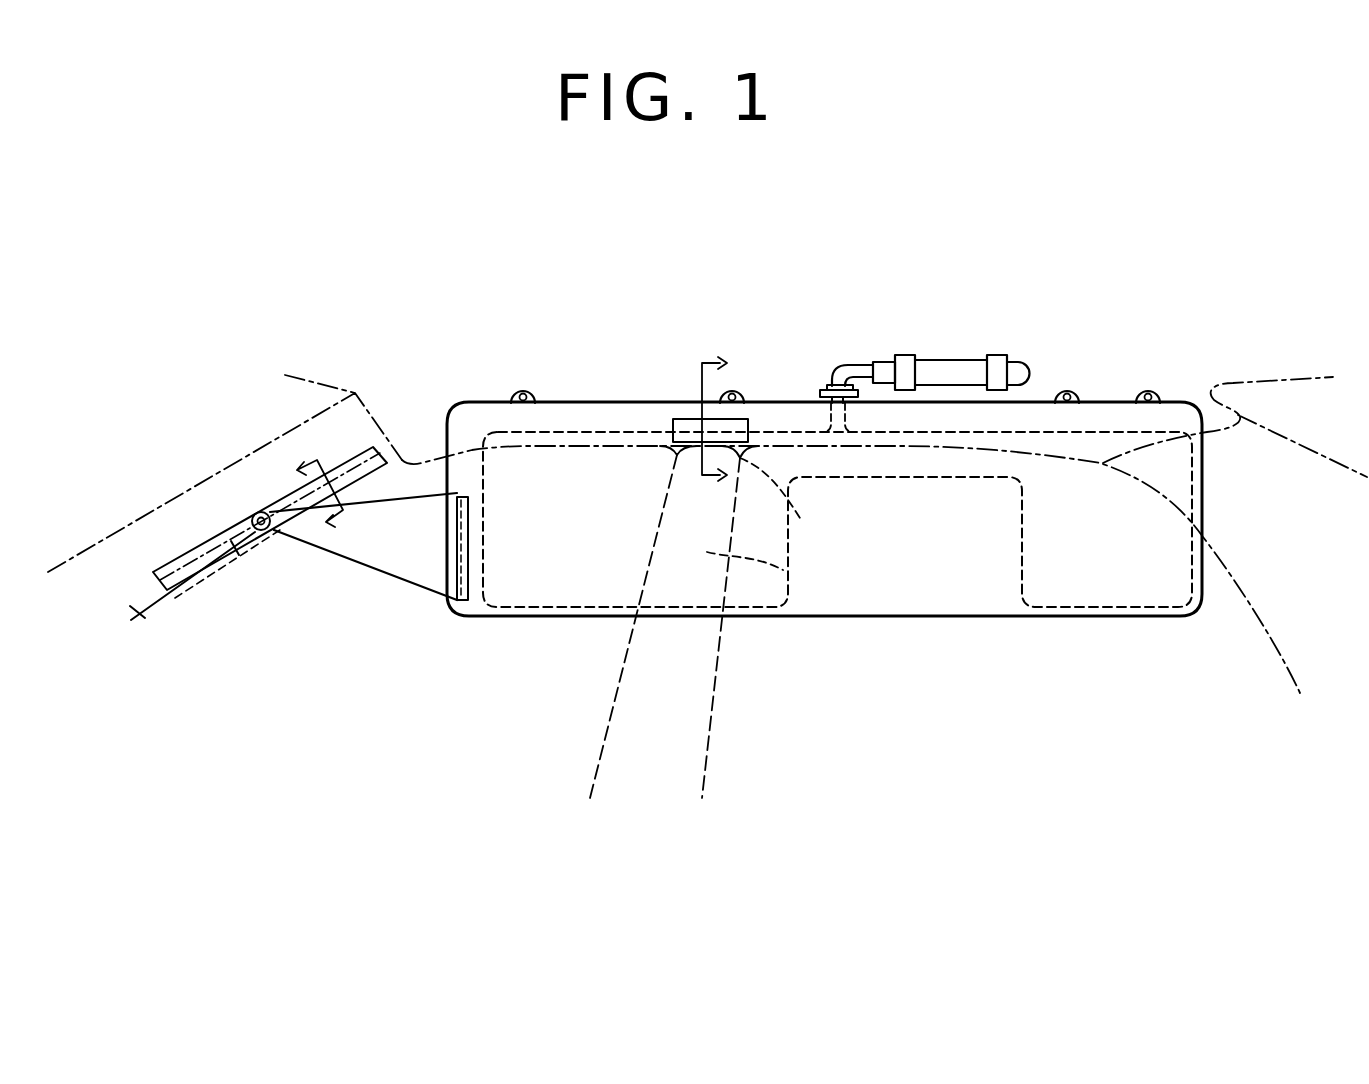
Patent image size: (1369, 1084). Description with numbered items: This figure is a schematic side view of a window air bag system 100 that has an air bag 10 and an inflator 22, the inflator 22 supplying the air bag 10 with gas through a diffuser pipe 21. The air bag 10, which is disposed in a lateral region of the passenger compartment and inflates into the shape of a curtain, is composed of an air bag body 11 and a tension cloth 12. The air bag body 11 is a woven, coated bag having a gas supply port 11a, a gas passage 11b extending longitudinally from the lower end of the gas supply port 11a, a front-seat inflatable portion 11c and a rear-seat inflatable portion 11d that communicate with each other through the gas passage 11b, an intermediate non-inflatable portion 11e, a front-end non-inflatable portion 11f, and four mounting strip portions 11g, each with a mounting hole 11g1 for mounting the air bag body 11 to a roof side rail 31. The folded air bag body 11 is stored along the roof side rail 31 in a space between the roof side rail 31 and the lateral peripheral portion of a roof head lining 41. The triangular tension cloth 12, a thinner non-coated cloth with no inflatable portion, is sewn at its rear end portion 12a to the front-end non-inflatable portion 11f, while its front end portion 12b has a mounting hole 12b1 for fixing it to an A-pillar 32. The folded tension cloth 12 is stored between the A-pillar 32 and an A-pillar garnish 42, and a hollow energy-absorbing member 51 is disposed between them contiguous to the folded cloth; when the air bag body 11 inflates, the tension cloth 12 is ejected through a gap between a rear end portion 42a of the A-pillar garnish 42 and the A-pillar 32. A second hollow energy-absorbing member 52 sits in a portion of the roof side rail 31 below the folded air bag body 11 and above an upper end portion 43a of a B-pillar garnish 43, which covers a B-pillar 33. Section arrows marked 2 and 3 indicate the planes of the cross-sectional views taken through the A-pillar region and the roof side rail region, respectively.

The window air bag system 100 is at (761, 336).
The air bag 10 is at (838, 631).
The air bag body 11 is at (917, 595).
The gas supply port 11a is at (828, 380).
The gas passage 11b is at (930, 517).
The front-seat inflatable portion 11c is at (613, 465).
The rear-seat inflatable portion 11d is at (1103, 570).
The intermediate non-inflatable portion 11e is at (1000, 597).
The front-end non-inflatable portion 11f is at (467, 473).
The mounting strip portions 11g is at (523, 388).
The mounting hole 11g1 is at (530, 390).
The tension cloth 12 is at (368, 545).
The rear end portion 12a is at (446, 607).
The front end portion 12b is at (258, 512).
The mounting hole 12b1 is at (253, 514).
The diffuser pipe 21 is at (860, 364).
The inflator 22 is at (947, 360).
The roof side rail 31 is at (533, 450).
The A-pillar 32 is at (173, 500).
The B-pillar 33 is at (712, 736).
The roof head lining 41 is at (1087, 450).
The A-pillar garnish 42 is at (137, 612).
The rear end portion 42a is at (223, 568).
The B-pillar garnish 43 is at (783, 570).
The upper end portion 43a is at (800, 518).
The energy-absorbing member 51 is at (242, 552).
The energy-absorbing member 52 is at (740, 427).
The section line 2- 2 is at (305, 503).
The section line 3- 3 is at (725, 431).